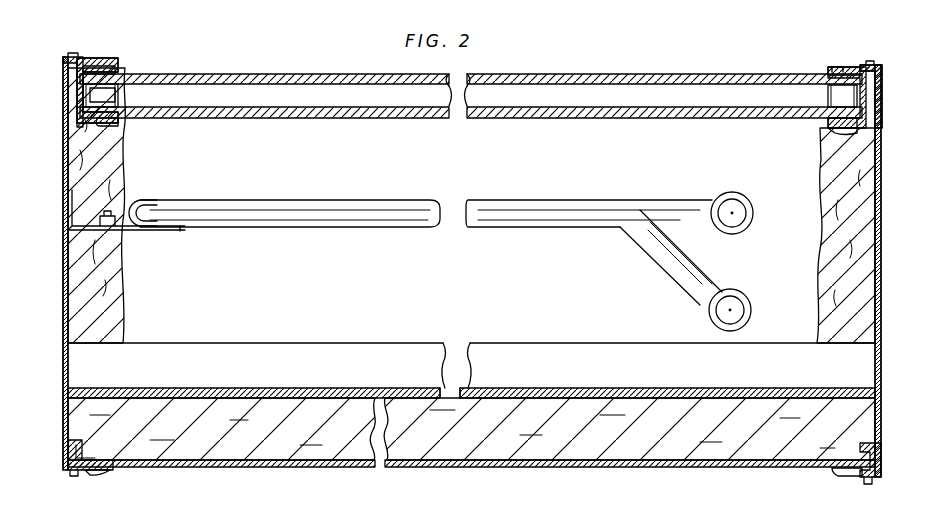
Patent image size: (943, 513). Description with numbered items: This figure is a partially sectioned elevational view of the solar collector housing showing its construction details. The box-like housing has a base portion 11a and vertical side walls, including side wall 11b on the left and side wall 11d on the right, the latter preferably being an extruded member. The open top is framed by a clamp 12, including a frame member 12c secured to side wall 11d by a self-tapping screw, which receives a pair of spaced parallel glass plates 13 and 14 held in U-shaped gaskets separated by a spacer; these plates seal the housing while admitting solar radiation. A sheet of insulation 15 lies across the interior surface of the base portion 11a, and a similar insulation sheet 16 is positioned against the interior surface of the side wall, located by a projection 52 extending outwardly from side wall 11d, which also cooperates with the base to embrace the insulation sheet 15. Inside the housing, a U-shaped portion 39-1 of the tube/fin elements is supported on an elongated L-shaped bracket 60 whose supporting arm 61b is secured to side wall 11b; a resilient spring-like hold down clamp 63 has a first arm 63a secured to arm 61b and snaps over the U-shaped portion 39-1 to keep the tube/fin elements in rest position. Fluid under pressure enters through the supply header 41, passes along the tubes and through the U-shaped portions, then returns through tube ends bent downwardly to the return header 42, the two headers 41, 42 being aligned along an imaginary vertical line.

The base portion 11a is at (432, 470).
The side wall 11b is at (64, 145).
The side wall 11d is at (882, 258).
The clamp 12 is at (885, 80).
The frame member 12c is at (840, 67).
The glass plate 13 is at (658, 64).
The glass plate 14 is at (650, 120).
The insulation sheet 15 is at (300, 398).
The insulation sheet 16 is at (826, 265).
The U-shaped portion 39-1 is at (152, 211).
The supply header 41 is at (754, 210).
The return header 42 is at (752, 310).
The projection 52 is at (120, 392).
The support bracket 60 is at (122, 231).
The supporting arm 61b is at (183, 233).
The hold down clamp 63 is at (144, 197).
The first arm 63a is at (105, 212).